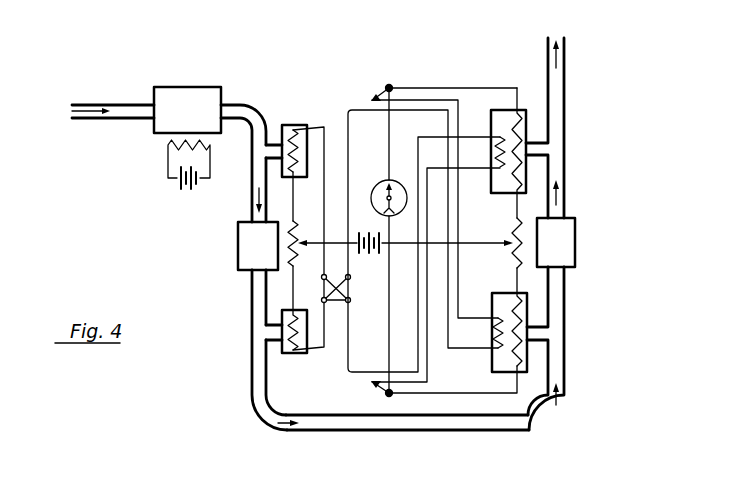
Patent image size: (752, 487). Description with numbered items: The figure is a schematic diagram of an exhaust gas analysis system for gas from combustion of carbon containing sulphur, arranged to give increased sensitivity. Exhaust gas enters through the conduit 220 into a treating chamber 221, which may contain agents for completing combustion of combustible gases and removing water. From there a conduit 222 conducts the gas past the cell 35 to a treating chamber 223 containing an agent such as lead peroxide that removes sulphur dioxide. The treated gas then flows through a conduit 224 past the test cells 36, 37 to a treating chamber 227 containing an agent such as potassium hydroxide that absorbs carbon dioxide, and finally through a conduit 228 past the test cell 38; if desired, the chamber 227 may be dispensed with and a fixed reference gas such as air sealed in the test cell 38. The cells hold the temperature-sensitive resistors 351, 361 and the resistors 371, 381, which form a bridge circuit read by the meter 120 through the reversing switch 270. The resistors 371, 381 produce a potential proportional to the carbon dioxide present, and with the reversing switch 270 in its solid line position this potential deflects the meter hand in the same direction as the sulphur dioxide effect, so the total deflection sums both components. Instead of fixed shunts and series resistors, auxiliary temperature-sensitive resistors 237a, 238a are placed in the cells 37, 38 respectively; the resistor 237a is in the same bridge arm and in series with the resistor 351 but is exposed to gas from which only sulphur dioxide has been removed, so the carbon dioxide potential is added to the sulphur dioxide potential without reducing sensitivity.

The conduit 220 is at (99, 95).
The treating chamber 221 is at (177, 95).
The conduit 222 is at (253, 178).
The treating chamber 223 is at (238, 242).
The conduit 224 is at (340, 420).
The treating chamber 227 is at (570, 248).
The conduit 228 is at (565, 99).
The cell 35 is at (288, 126).
The temperature-sensitive resistor 351 is at (303, 128).
The test cell 36 is at (288, 352).
The temperature-sensitive resistor 361 is at (310, 352).
The test cell 37 is at (492, 368).
The resistor 371 is at (508, 353).
The test cell 38 is at (493, 121).
The resistor 381 is at (515, 128).
The auxiliary temperature-sensitive resistor 237a is at (497, 318).
The auxiliary temperature-sensitive resistor 238a is at (498, 172).
The meter 120 is at (380, 191).
The reversing switch 270 is at (351, 296).